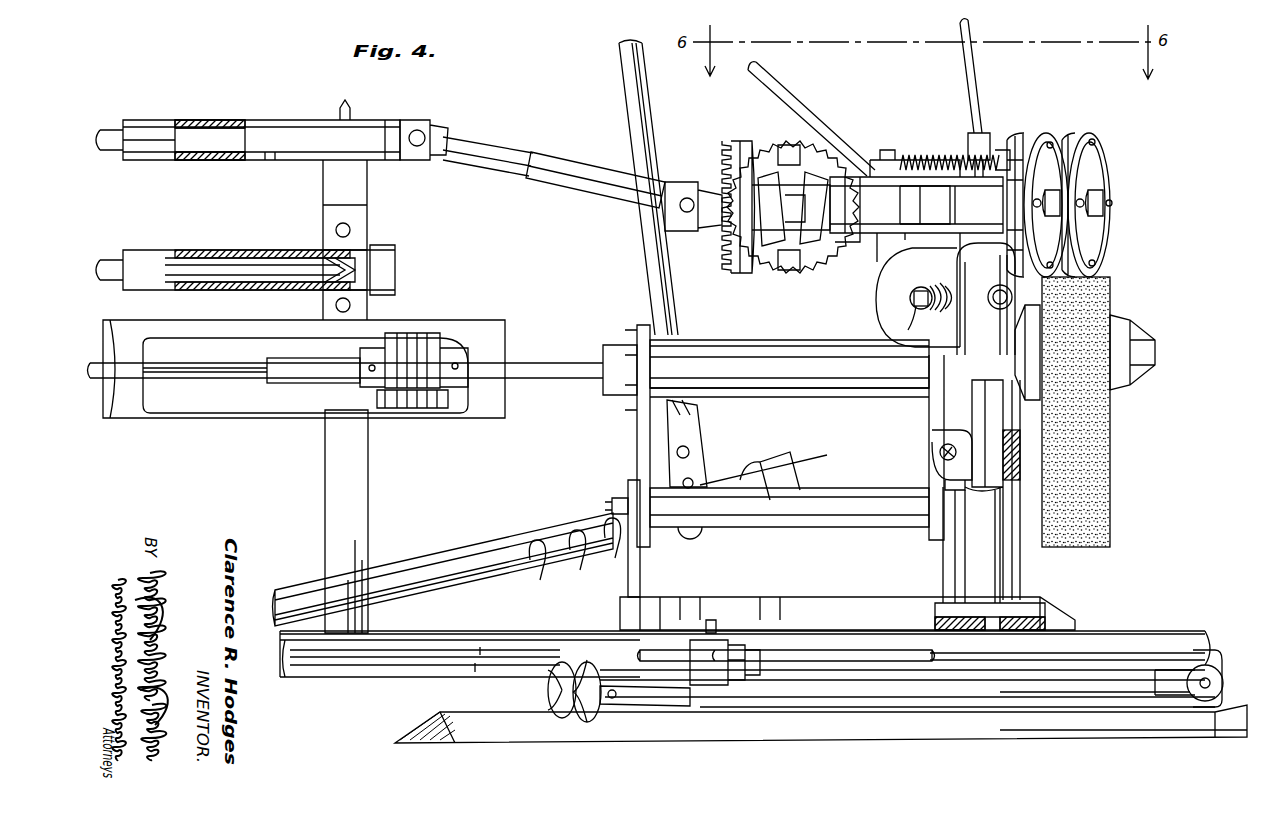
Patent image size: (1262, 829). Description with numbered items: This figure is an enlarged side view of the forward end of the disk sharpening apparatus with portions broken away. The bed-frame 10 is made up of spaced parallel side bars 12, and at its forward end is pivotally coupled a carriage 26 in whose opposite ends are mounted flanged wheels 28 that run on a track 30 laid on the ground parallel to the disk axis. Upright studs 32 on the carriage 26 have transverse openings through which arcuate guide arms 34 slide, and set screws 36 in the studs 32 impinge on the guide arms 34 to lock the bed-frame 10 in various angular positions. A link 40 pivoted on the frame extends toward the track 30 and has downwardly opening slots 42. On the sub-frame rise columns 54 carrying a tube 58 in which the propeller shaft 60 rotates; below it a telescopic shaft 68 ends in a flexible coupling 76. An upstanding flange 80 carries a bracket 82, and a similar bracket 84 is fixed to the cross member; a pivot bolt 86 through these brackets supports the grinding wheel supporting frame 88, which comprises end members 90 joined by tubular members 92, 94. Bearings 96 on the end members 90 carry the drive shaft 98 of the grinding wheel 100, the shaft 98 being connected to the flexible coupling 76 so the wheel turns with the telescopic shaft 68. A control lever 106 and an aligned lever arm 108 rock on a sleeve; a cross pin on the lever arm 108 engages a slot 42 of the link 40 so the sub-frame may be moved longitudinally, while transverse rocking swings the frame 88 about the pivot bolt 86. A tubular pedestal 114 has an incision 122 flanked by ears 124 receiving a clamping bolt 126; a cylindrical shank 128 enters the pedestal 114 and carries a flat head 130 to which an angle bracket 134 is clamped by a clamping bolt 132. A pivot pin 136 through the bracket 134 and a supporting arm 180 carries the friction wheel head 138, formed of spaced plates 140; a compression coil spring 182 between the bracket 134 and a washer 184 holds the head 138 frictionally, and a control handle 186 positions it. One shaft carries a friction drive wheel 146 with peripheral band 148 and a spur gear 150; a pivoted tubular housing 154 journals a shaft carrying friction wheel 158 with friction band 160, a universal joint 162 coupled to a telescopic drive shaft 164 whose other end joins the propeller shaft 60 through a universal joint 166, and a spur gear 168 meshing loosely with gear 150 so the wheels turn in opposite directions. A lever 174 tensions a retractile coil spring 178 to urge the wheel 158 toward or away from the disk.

The bed-frame 10 is at (362, 683).
The side bars 12 is at (480, 672).
The carriage 26 is at (955, 698).
The flanged wheels 28 is at (560, 708).
The track 30 is at (1008, 740).
The studs 32 is at (705, 685).
The arcuate guide arms 34 is at (858, 664).
The set screws 36 is at (718, 620).
The link 40 is at (435, 551).
The slots 42 is at (580, 552).
The columns 54 is at (365, 472).
The tube 58 is at (290, 120).
The propeller shaft 60 is at (215, 128).
The telescopic shaft 68 is at (280, 382).
The flexible coupling 76 is at (420, 333).
The upstanding flange 80 is at (620, 612).
The bracket 82 is at (626, 480).
The bracket 84 is at (950, 572).
The pivot bolt 86 is at (606, 505).
The grinding wheel supporting frame 88 is at (790, 350).
The end members 90 is at (636, 456).
The tubular member 92 is at (815, 520).
The tubular member 94 is at (722, 355).
The bearings 96 is at (612, 350).
The drive shaft 98 is at (545, 362).
The grinding wheel 100 is at (1100, 492).
The control lever 106 is at (636, 97).
The lever arm 108 is at (700, 462).
The pedestal 114 is at (970, 540).
The incision 122 is at (935, 478).
The ears 124 is at (935, 440).
The clamping bolt 126 is at (940, 452).
The cylindrical shank 128 is at (1020, 400).
The flat head 130 is at (1010, 333).
The clamping bolt 132 is at (1012, 297).
The angle bracket 134 is at (930, 345).
The pivot pin 136 is at (916, 296).
The friction wheel carrying head 138 is at (912, 177).
The plates 140 is at (878, 177).
The friction drive wheel 146 is at (1096, 175).
The peripheral band 148 is at (1077, 138).
The spur gear 150 is at (790, 145).
The tubular housing 154 is at (800, 250).
The friction wheel 158 is at (1060, 238).
The friction band 160 is at (1030, 136).
The universal joint 162 is at (687, 235).
The telescopic drive shaft 164 is at (553, 165).
The universal joint 166 is at (420, 125).
The spur gear 168 is at (730, 142).
The lever 174 is at (800, 90).
The retractile coil spring 178 is at (950, 153).
The supporting arm 180 is at (878, 270).
The compression coil spring 182 is at (940, 285).
The washer 184 is at (915, 324).
The control handle 186 is at (980, 88).